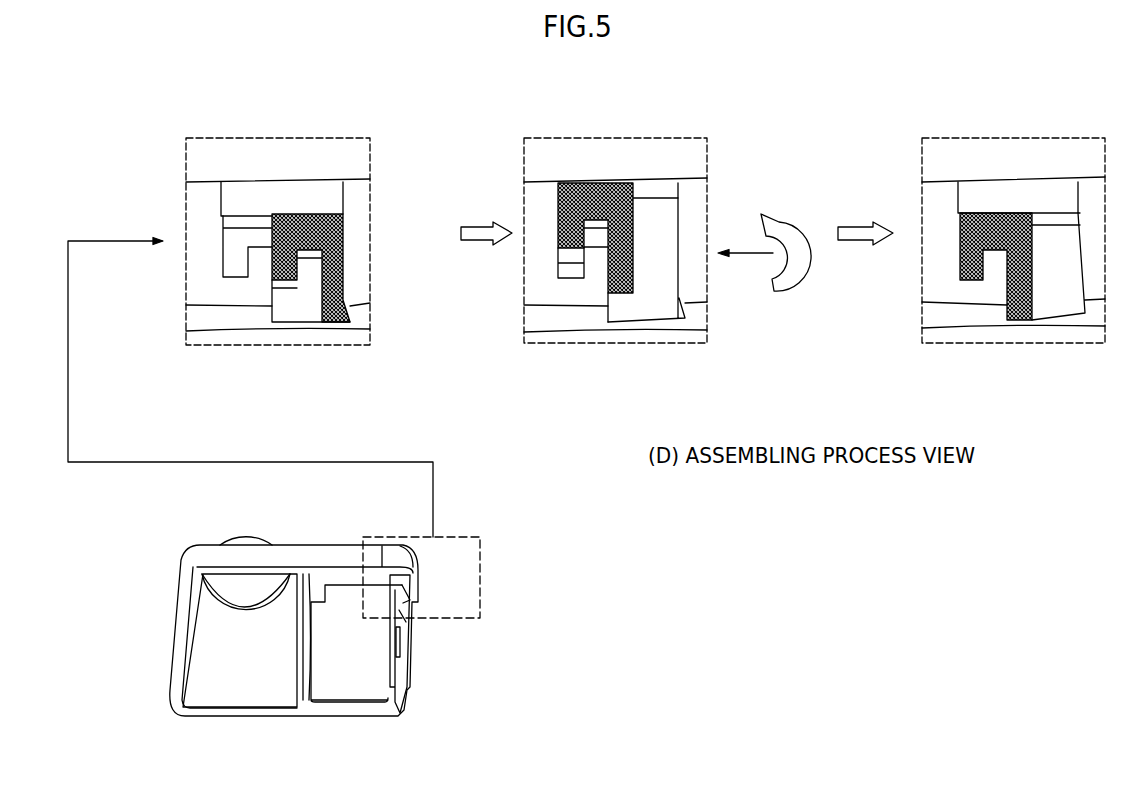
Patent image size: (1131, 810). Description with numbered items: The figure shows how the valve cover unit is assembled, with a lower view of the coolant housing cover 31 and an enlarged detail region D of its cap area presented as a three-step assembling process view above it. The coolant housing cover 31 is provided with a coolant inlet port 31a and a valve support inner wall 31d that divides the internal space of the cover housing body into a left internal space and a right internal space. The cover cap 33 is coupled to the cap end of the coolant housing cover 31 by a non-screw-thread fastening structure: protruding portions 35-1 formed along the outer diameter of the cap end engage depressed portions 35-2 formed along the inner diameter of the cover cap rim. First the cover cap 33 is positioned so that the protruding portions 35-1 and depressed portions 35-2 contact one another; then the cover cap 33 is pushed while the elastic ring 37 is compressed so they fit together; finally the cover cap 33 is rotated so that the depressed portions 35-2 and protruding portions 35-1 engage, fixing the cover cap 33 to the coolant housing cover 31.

The coolant housing cover 31 is at (175, 633).
The coolant inlet port 31a is at (227, 582).
The valve support inner wall 31d is at (294, 676).
The cover cap 33 is at (298, 157).
The protruding portions 35-1 is at (202, 205).
The depressed portions 35-2 is at (322, 297).
The elastic ring 37 is at (248, 198).
The detail region D is at (481, 586).